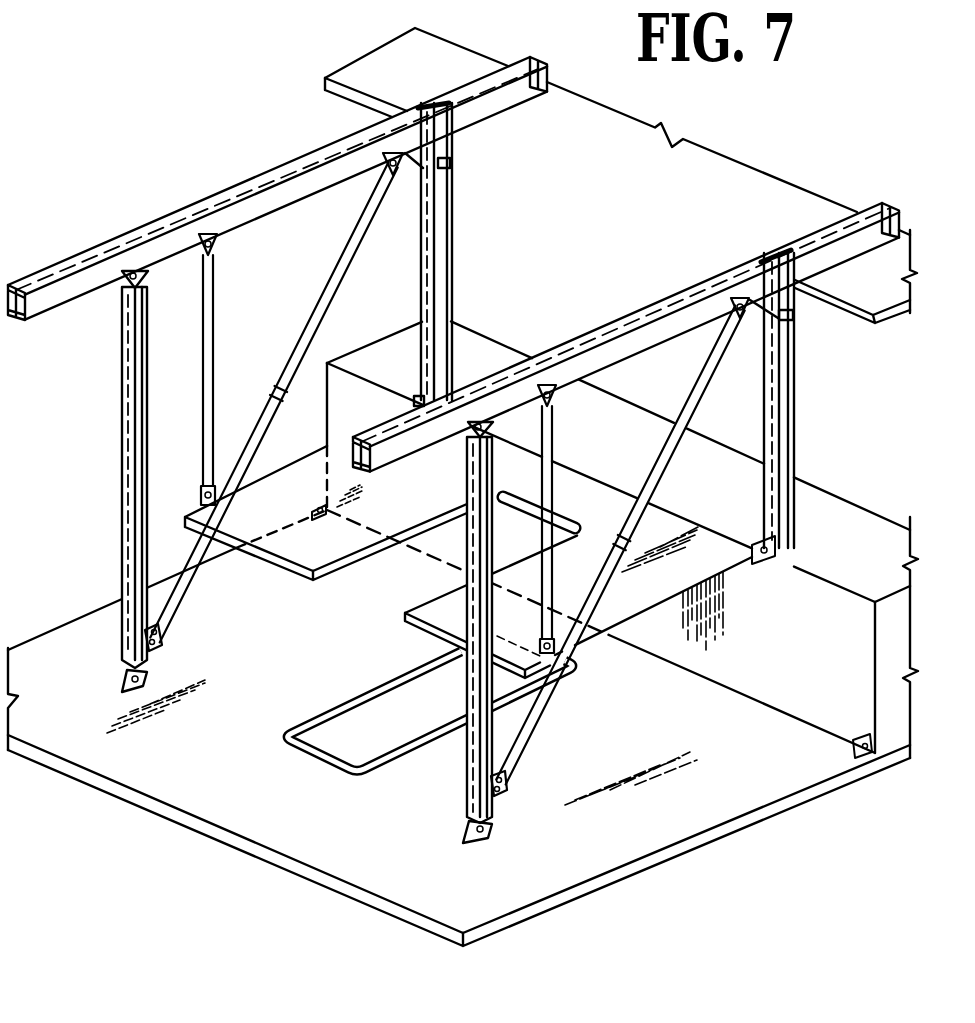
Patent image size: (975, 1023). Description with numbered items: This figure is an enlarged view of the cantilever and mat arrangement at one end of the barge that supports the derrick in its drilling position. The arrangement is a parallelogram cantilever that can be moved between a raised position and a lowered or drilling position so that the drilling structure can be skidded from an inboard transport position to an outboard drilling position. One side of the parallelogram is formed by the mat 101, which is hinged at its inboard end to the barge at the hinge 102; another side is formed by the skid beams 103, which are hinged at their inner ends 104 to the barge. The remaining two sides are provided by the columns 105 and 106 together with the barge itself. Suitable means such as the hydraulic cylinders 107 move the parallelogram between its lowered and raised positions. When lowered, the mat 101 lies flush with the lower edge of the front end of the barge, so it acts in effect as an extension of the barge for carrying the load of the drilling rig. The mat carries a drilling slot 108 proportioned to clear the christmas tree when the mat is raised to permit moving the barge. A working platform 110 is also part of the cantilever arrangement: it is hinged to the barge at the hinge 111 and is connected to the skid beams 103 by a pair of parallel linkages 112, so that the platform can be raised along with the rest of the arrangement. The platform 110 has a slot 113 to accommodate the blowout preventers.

The mat 101 is at (525, 882).
The hinge 102 is at (853, 752).
The skid beams 103 is at (55, 288).
The inner ends of skid beams 104 is at (439, 100).
The column 105 is at (122, 458).
The column 106 is at (452, 252).
The hydraulic cylinders 107 is at (314, 318).
The drilling slot 108 is at (375, 720).
The working platform 110 is at (280, 545).
The hinge 111 is at (762, 562).
The parallel linkages 112 is at (217, 280).
The slot 113 is at (360, 560).